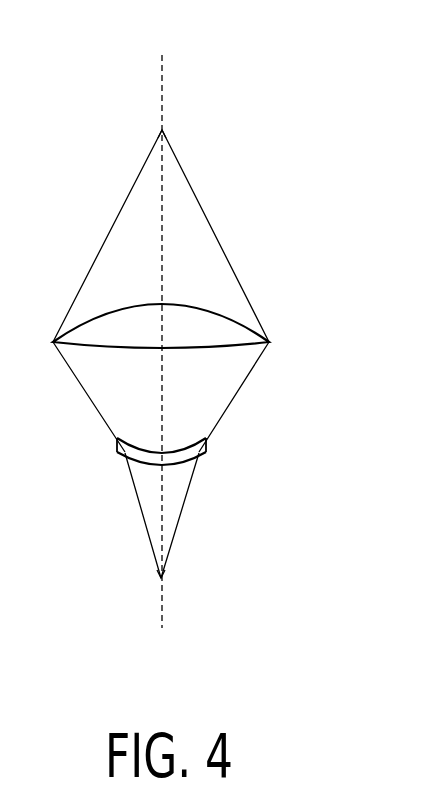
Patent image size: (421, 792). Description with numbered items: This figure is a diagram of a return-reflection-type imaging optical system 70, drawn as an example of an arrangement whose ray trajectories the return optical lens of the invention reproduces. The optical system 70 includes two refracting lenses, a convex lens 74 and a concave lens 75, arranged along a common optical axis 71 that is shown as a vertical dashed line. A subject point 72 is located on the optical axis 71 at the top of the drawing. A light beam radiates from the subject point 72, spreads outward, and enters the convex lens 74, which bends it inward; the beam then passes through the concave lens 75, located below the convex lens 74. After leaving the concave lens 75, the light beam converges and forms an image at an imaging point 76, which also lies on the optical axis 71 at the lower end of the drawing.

The optical system 70 is at (53, 42).
The optical axis 71 is at (163, 69).
The subject point 72 is at (162, 130).
The convex lens 74 is at (257, 331).
The concave lens 75 is at (206, 449).
The imaging point 76 is at (161, 579).